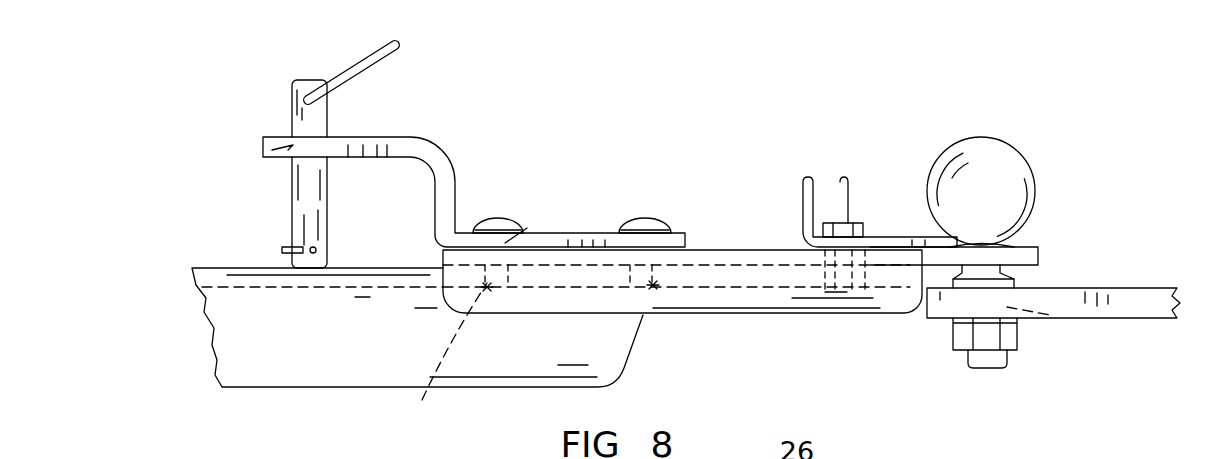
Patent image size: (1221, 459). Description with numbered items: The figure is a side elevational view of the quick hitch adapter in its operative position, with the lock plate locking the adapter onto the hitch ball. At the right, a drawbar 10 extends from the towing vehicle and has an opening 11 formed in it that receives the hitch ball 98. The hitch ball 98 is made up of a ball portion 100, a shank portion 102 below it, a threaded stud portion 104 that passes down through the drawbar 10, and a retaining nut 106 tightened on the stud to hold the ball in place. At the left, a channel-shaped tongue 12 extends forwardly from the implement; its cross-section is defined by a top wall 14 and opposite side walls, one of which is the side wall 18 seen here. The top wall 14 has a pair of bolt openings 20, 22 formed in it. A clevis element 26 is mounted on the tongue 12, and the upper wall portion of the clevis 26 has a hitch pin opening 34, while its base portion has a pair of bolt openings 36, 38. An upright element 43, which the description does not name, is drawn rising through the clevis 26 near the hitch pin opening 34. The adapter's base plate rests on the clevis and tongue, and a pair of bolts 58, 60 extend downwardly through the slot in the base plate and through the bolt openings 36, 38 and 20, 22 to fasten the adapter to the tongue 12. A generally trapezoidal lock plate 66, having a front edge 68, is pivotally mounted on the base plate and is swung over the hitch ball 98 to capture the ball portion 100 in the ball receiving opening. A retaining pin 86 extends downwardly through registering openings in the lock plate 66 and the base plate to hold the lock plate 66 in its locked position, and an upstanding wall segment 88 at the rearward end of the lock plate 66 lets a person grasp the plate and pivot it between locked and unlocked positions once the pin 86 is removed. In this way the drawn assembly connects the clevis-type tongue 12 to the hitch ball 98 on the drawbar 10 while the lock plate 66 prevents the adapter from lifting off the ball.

The drawbar 10 is at (1134, 287).
The opening 11 is at (1077, 322).
The tongue 12 is at (197, 359).
The top wall 14 is at (192, 278).
The side wall 18 is at (320, 356).
The bolt opening 20 is at (441, 361).
The bolt opening 22 is at (655, 292).
The clevis element 26 is at (432, 126).
The hitch pin opening 34 is at (262, 148).
The bolt opening 36 is at (525, 232).
The bolt opening 38 is at (632, 243).
The post 43 is at (288, 193).
The bolt 58 is at (498, 223).
The bolt 60 is at (643, 222).
The lock plate 66 is at (897, 240).
The front edge 68 is at (958, 237).
The retaining pin 86 is at (850, 223).
The upstanding wall segment 88 is at (802, 210).
The hitch ball 98 is at (1028, 145).
The ball portion 100 is at (958, 238).
The shank portion 102 is at (983, 272).
The threaded stud portion 104 is at (993, 358).
The retaining nut 106 is at (957, 340).